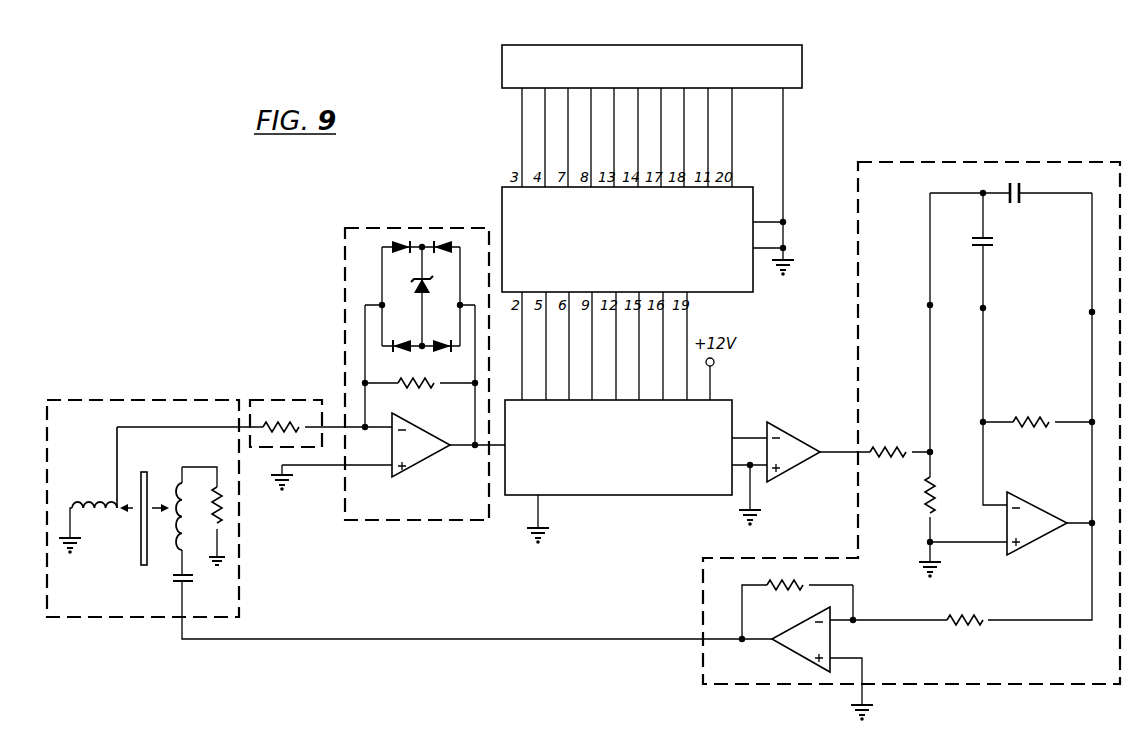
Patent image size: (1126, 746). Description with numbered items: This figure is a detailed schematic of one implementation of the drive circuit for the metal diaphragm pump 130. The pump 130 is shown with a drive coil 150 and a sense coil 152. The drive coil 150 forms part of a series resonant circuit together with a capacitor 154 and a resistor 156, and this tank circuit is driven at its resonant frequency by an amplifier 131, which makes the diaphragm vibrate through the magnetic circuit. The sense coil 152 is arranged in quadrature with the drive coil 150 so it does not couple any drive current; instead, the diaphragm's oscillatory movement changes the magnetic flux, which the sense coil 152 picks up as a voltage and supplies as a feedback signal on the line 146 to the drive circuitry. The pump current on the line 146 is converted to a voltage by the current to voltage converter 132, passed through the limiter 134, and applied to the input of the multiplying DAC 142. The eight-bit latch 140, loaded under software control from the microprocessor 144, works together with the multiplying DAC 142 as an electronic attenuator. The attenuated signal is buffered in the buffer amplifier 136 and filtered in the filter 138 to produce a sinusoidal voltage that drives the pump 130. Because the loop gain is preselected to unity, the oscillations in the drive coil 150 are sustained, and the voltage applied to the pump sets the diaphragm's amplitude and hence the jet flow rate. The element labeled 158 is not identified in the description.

The pump 130 is at (163, 400).
The amplifier 131 is at (794, 655).
The current to voltage converter 132 is at (302, 400).
The limiter 134 is at (433, 228).
The amplifier 136 is at (790, 430).
The filter 138 is at (1032, 162).
The 8-bit latch 140 is at (742, 292).
The multiplying DAC 142 is at (643, 495).
The microprocessor 144 is at (805, 67).
The line 146 is at (244, 424).
The drive coil 150 is at (177, 490).
The sense coil 152 is at (98, 498).
The capacitor 154 is at (175, 584).
The resistor 156 is at (223, 518).
The vibrating plate 158 is at (140, 548).